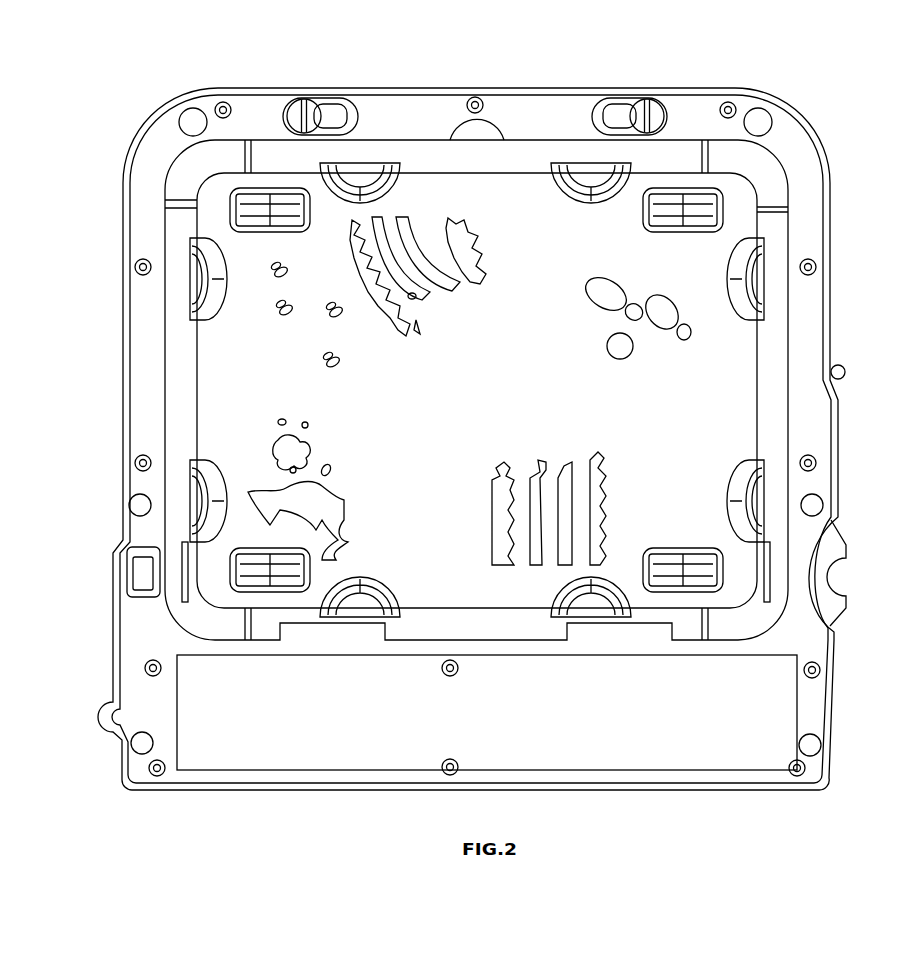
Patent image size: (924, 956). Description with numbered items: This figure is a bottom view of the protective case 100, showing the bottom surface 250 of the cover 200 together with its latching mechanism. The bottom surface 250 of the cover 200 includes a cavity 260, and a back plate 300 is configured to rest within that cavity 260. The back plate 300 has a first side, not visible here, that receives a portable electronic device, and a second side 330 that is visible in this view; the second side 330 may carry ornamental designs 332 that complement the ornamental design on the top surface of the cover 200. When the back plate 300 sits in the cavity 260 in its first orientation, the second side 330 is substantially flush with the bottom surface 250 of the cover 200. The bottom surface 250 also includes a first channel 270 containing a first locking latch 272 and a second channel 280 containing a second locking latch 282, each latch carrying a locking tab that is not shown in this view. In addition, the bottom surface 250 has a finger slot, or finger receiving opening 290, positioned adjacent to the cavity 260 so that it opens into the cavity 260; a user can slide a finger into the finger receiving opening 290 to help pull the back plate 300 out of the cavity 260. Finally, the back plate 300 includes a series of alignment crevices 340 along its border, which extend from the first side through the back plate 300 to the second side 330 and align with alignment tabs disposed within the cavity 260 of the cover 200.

The protective case 100 is at (850, 120).
The cover 200 is at (170, 713).
The bottom surface 250 is at (150, 168).
The cavity 260 is at (782, 343).
The first channel 270 is at (340, 100).
The first locking latch 272 is at (292, 110).
The second channel 280 is at (592, 110).
The second locking latch 282 is at (655, 112).
The finger receiving opening 290 is at (463, 130).
The back plate 300 is at (700, 357).
The second side 330 is at (205, 424).
The ornamental designs 332 is at (617, 347).
The alignment crevices 340 is at (240, 160).